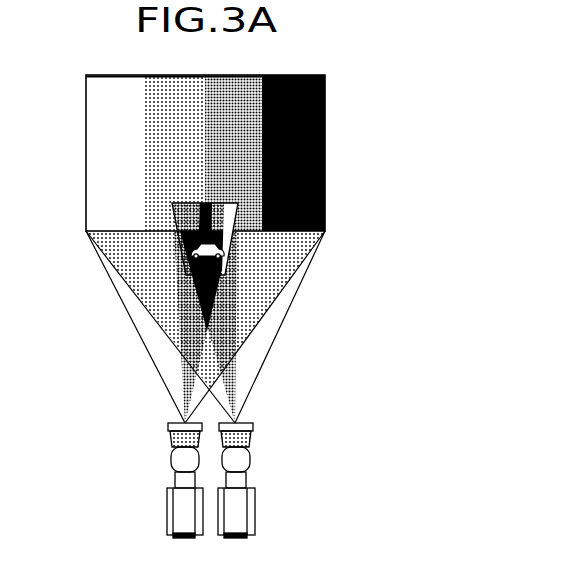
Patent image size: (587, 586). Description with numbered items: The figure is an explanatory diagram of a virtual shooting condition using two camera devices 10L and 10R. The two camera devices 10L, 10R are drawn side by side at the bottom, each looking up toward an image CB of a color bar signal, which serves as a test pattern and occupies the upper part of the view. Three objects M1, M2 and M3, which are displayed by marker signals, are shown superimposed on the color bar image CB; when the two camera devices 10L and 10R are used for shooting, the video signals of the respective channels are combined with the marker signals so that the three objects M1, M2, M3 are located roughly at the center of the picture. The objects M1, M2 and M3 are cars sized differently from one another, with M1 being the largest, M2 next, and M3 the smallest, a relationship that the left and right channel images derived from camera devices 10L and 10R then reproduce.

The image of a color bar signal CB is at (325, 135).
The object M1 is at (347, 239).
The object M2 is at (347, 239).
The object M3 is at (219, 251).
The camera device 10L is at (167, 514).
The camera device 10R is at (255, 512).